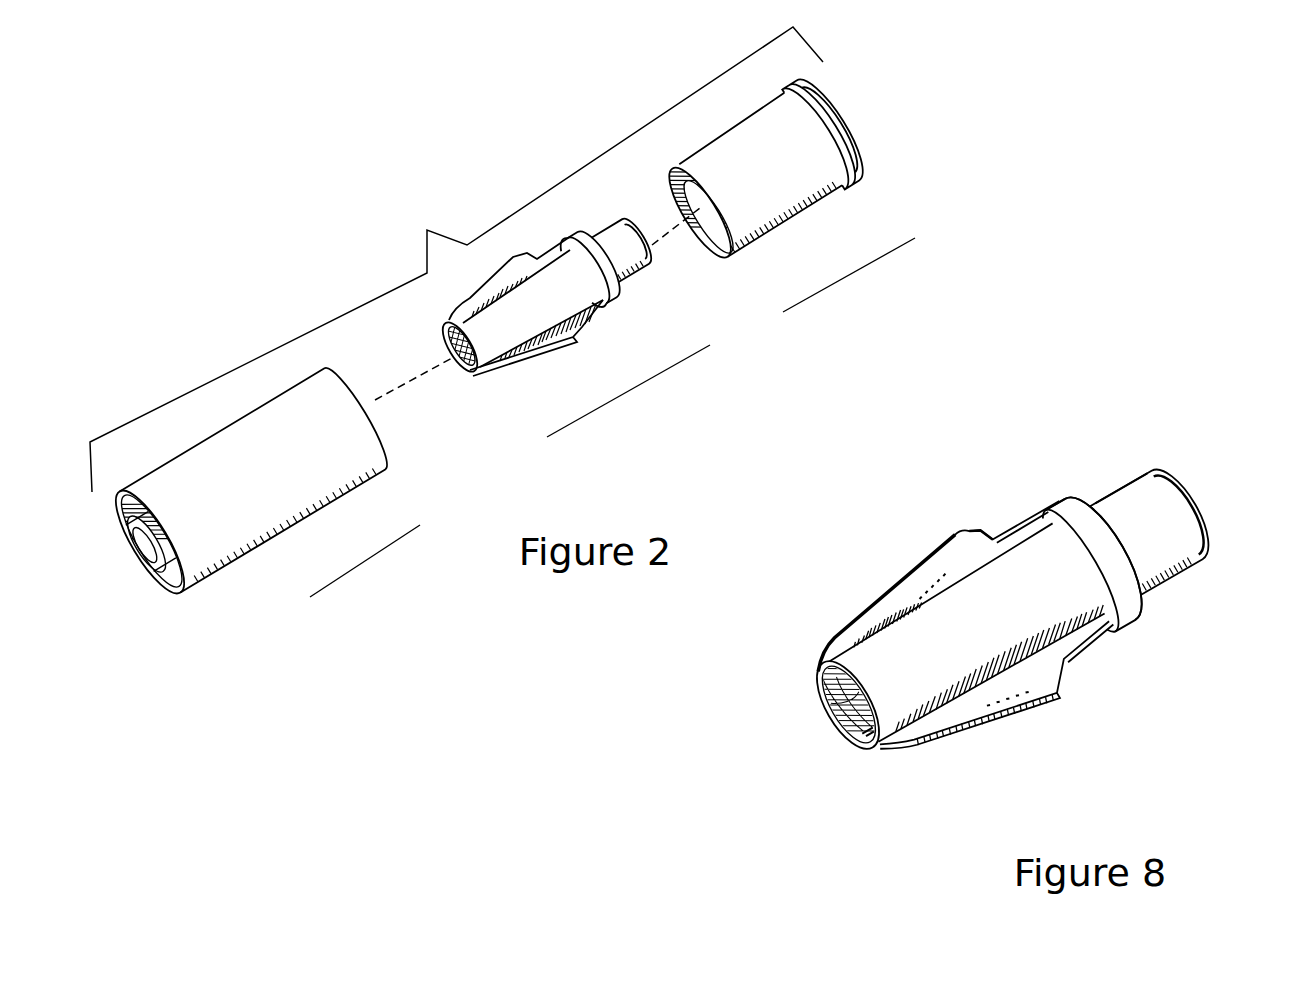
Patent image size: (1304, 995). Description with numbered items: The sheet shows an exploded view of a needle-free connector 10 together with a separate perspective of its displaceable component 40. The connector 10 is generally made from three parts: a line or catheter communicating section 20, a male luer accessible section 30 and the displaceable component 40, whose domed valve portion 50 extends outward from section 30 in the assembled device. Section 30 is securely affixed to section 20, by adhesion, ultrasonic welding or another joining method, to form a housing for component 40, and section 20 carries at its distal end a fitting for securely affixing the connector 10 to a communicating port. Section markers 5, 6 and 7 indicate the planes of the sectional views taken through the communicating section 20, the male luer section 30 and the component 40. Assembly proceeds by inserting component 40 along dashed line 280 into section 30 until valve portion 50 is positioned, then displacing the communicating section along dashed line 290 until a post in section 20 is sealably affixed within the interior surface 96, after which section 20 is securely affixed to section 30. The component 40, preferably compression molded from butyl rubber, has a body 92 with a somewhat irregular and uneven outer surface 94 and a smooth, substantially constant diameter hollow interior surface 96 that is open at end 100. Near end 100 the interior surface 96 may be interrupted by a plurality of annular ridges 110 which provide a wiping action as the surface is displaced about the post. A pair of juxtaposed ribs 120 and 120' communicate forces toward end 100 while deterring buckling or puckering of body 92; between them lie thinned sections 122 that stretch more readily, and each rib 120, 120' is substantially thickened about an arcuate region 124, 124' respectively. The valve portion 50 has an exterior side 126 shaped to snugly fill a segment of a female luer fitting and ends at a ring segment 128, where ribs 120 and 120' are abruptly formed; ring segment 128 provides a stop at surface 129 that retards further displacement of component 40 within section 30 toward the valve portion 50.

In FIG. 2, the section line 5- 5 is at (420, 525).
In FIG. 2, the section line 6- 6 is at (915, 238).
In FIG. 2, the section line 7- 7 is at (710, 345).
In FIG. 2, the needle-free connector 10 is at (456, 259).
In FIG. 2, the line or catheter communicating section 20 is at (205, 436).
In FIG. 2, the male luer accessible section 30 is at (727, 128).
In FIG. 2, the displaceable component 40 is at (512, 256).
In FIG. 8, the displaceable component 40 is at (1215, 474).
In FIG. 8, the domed valve portion 50 is at (1180, 472).
In FIG. 8, the body 92 is at (1118, 622).
In FIG. 8, the outer surface 94 is at (984, 526).
In FIG. 8, the hollow interior surface 96 is at (823, 708).
In FIG. 8, the end 100 is at (817, 680).
In FIG. 8, the annular ridges 110 is at (870, 747).
In FIG. 8, the rib 120 is at (933, 563).
In FIG. 8, the rib 120' is at (1024, 700).
In FIG. 8, the thinned sections 122 is at (888, 593).
In FIG. 8, the arcuate region 124 is at (918, 492).
In FIG. 8, the arcuate region 124' is at (1110, 722).
In FIG. 8, the exterior side 126 is at (1133, 472).
In FIG. 8, the ring segment 128 is at (1143, 595).
In FIG. 8, the surface 129 is at (1077, 492).
In FIG. 2, the dashed line 280 is at (700, 300).
In FIG. 2, the dashed line 290 is at (400, 388).